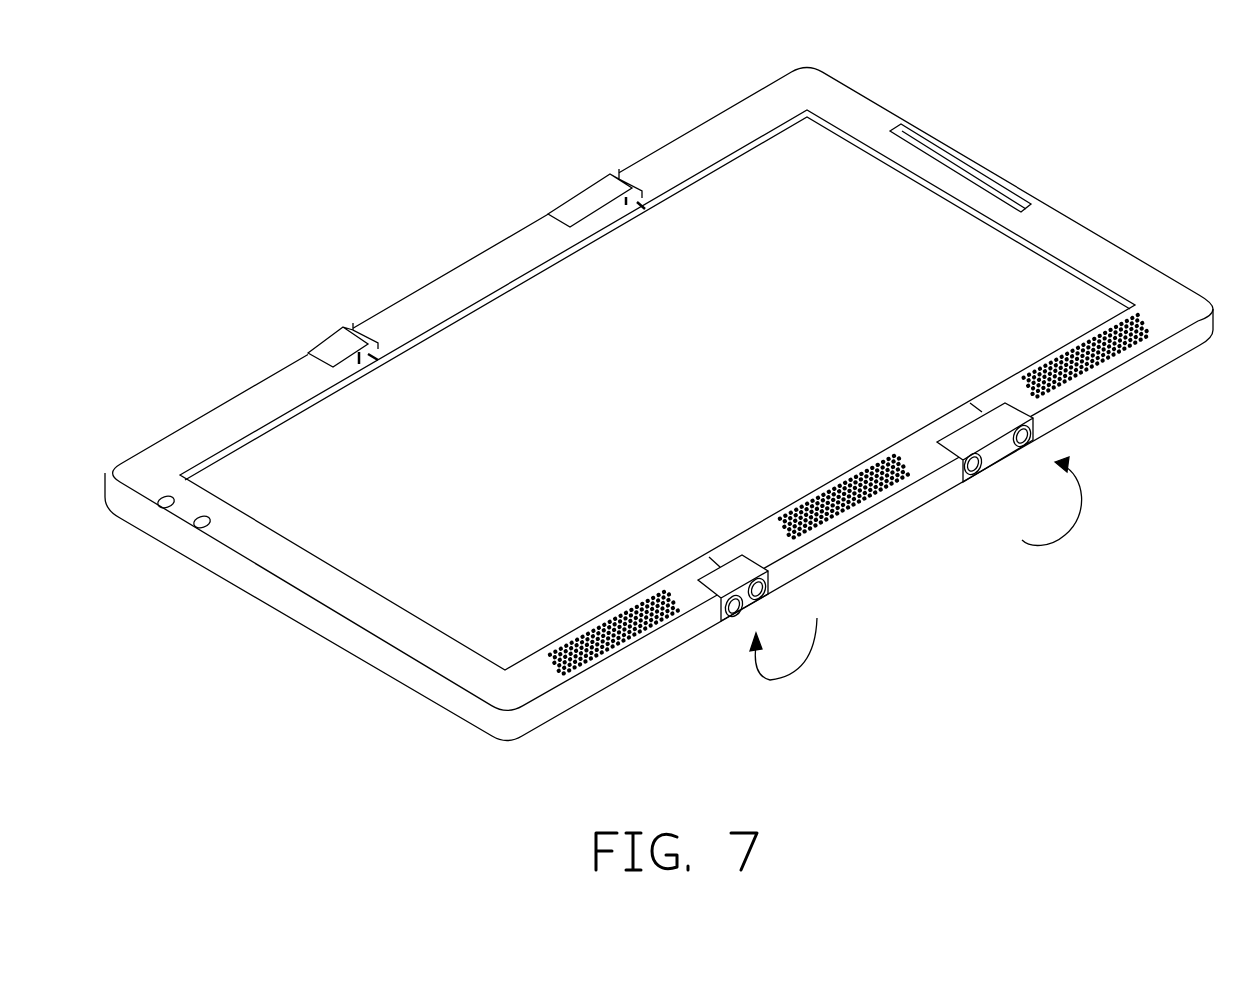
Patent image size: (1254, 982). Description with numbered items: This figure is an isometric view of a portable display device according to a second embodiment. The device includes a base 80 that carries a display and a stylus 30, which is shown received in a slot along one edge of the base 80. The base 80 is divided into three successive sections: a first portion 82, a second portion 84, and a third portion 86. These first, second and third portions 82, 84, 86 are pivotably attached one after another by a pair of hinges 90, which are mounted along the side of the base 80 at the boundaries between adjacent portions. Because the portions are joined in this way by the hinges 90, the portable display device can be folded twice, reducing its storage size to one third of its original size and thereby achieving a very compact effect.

The stylus 30 is at (965, 168).
The base 80 is at (200, 283).
The first portion 82 is at (265, 390).
The second portion 84 is at (448, 277).
The third portion 86 is at (663, 153).
The hinges 90 is at (733, 608).